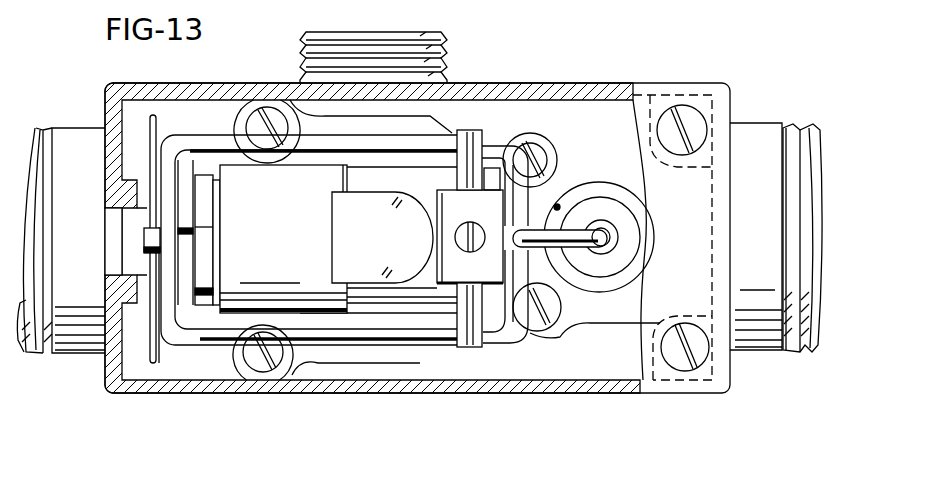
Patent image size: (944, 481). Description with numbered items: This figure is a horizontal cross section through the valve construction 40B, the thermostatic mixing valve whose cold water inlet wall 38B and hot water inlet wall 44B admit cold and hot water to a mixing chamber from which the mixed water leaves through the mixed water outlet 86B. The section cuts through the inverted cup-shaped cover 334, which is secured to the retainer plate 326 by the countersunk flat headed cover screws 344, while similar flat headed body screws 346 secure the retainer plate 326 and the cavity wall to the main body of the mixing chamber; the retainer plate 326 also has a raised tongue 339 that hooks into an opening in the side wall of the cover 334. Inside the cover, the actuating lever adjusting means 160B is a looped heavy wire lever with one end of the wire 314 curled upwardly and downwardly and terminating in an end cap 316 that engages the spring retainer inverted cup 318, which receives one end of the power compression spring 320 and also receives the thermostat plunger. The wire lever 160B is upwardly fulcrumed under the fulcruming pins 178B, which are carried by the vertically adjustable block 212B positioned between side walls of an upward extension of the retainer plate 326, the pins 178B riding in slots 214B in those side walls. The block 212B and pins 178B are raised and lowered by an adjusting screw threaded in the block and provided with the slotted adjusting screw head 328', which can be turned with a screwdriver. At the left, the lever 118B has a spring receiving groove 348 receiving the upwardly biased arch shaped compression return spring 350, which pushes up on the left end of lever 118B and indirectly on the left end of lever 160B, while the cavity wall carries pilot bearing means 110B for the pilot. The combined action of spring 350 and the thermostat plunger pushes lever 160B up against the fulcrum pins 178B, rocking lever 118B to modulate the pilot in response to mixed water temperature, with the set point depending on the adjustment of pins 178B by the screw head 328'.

The valve construction 40B is at (576, 56).
The cover 334 is at (213, 80).
The raised tongue 339 is at (115, 238).
The hot water inlet wall 44B is at (52, 352).
The cold water inlet wall 38B is at (447, 63).
The mixed water outlet 86B is at (793, 127).
The cover screws 344 is at (690, 120).
The body screws 346 is at (257, 127).
The return spring 350 is at (147, 353).
The spring receiving groove 348 is at (148, 240).
The actuating lever adjusting means 160B is at (193, 333).
The lever 118B is at (188, 233).
The pilot bearing means 110B is at (343, 225).
The slotted adjusting screw head 328' is at (394, 240).
The vertically adjustable block 212B is at (452, 273).
The fulcruming pins 178B is at (473, 135).
The slots 214B is at (495, 165).
The spring retainer inverted cup 318 is at (602, 272).
The end cap 316 is at (613, 227).
The end of the wire 314 is at (608, 240).
The power compression spring 320 is at (582, 293).
The retainer plate 326 is at (358, 357).